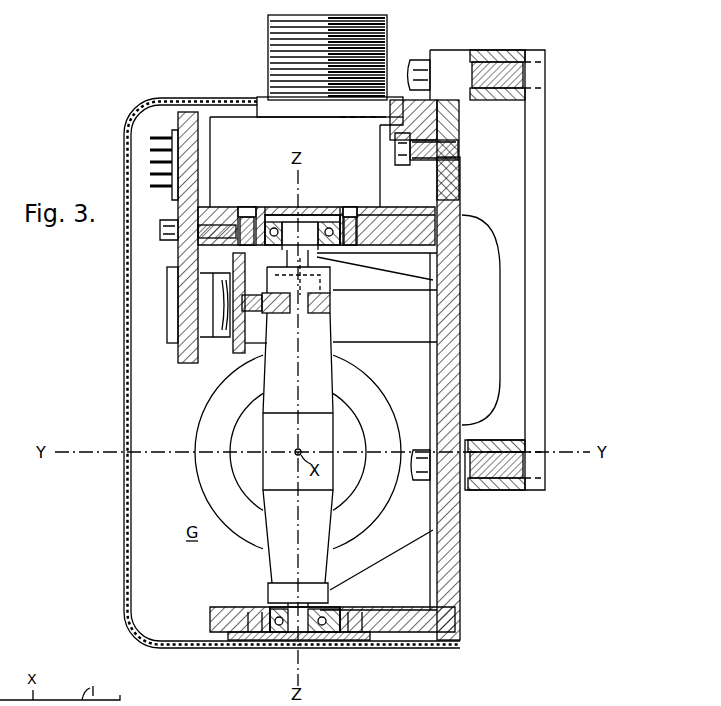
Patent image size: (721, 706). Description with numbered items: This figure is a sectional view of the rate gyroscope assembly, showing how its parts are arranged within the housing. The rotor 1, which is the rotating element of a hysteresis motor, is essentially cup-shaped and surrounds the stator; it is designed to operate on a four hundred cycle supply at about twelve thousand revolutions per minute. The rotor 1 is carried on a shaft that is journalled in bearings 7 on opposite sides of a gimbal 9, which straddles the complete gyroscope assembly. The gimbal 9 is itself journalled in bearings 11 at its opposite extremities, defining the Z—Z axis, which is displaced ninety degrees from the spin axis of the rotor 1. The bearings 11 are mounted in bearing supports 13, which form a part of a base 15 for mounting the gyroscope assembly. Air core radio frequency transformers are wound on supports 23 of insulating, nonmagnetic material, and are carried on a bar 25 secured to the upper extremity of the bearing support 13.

The rotor 1 is at (200, 482).
The bearings 7 is at (270, 473).
The gimbal 9 is at (276, 565).
The bearings 11 is at (307, 208).
The bearing supports 13 is at (222, 207).
The base 15 is at (462, 557).
The supports 23 is at (168, 283).
The bar 25 is at (192, 358).